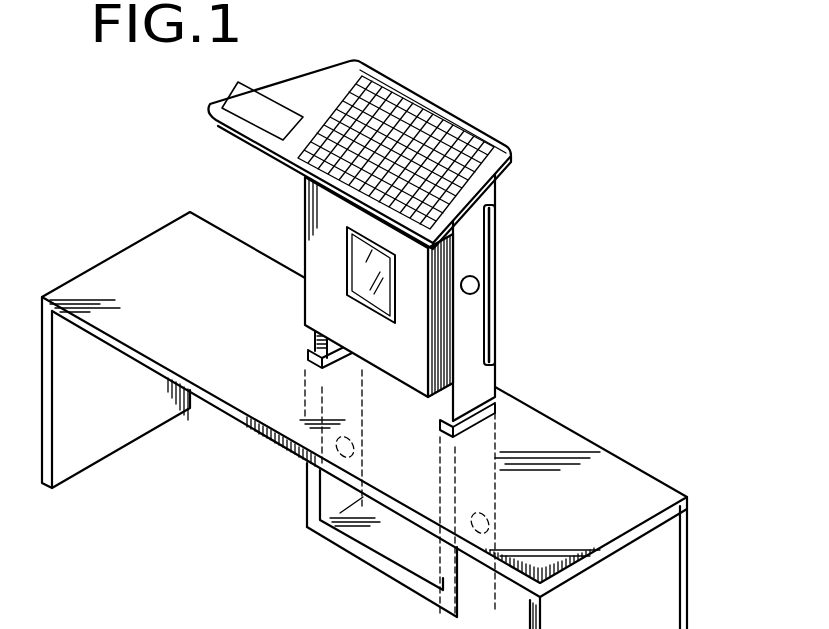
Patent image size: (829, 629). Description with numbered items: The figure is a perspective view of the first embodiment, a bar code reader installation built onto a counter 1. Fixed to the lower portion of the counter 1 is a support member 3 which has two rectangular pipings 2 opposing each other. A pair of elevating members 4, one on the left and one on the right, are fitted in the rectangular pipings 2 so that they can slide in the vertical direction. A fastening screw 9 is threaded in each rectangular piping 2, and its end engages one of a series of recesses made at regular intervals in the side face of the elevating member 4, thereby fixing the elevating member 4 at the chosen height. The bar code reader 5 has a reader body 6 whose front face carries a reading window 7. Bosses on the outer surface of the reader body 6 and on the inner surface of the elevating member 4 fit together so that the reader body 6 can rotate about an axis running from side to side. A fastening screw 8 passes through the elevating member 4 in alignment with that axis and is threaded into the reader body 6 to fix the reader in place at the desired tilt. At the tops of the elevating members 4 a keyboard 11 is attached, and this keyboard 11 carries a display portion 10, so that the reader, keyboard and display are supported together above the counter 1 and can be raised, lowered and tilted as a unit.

The counter 1 is at (127, 272).
The rectangular pipings 2 is at (330, 493).
The support member 3 is at (397, 547).
The elevating members 4 is at (305, 340).
The bar code reader 5 is at (493, 230).
The reader body 6 is at (307, 187).
The reading window 7 is at (360, 260).
The fastening screw 8 is at (497, 290).
The fastening screw 9 is at (340, 540).
The display portion 10 is at (262, 107).
The keyboard 11 is at (417, 113).